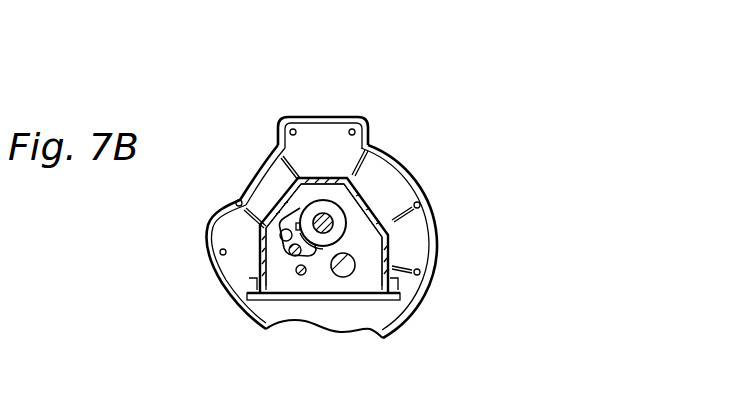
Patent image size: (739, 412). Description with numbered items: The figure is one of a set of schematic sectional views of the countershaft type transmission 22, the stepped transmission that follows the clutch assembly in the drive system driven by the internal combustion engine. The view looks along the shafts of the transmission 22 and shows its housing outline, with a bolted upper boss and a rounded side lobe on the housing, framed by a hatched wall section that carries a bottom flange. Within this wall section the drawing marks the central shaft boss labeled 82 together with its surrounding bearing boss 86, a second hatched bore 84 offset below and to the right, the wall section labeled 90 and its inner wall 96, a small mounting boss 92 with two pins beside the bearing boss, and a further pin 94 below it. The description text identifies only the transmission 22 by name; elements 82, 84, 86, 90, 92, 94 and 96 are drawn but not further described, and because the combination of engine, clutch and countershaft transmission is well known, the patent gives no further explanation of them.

The countershaft type transmission 22 is at (205, 246).
The shaft 82 is at (332, 219).
The bore 84 is at (356, 262).
The bearing boss 86 is at (350, 221).
The frame wall 90 is at (273, 224).
The mounting boss 92 is at (289, 251).
The pin 94 is at (301, 275).
The frame inner wall 96 is at (277, 226).